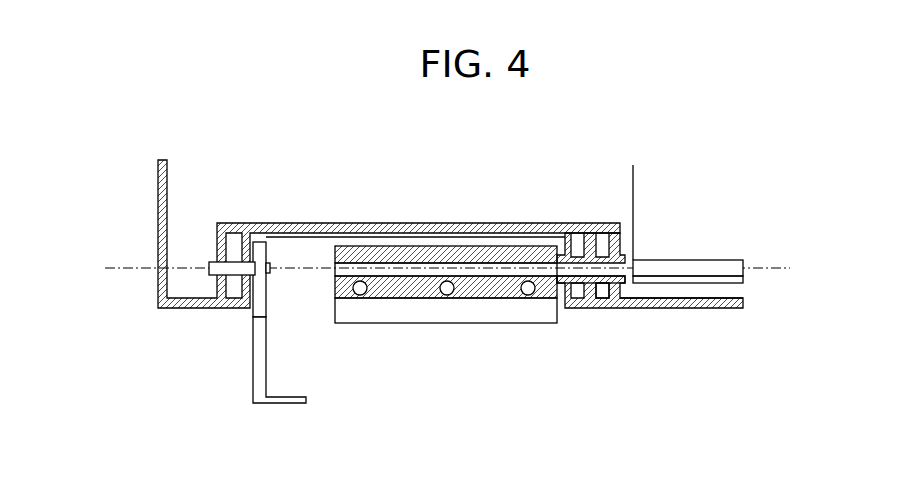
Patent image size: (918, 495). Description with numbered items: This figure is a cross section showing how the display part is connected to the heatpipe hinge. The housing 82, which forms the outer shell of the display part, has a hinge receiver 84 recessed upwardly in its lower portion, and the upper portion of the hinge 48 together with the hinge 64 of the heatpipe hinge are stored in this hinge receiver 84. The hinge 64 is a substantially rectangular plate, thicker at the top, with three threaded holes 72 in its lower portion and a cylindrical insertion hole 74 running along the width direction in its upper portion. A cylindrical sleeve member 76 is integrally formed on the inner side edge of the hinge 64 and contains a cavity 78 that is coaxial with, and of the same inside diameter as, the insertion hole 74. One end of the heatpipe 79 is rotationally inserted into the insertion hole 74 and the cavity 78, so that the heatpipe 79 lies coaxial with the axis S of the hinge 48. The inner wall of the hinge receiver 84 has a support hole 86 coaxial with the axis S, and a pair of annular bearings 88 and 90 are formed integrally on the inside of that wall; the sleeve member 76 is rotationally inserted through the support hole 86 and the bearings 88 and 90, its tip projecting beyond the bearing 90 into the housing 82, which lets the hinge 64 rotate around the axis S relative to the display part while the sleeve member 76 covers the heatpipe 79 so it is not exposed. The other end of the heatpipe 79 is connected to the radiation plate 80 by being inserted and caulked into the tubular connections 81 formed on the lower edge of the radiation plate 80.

The hinge 48 is at (261, 374).
The hinge 64 is at (436, 268).
The threaded holes 72 is at (362, 295).
The insertion hole 74 is at (389, 262).
The sleeve member 76 is at (604, 259).
The cavity 78 is at (625, 266).
The heatpipe 79 is at (473, 268).
The radiation plate 80 is at (632, 182).
The tubular connections 81 is at (724, 284).
The housing 82 is at (158, 302).
The hinge receiver 84 is at (282, 238).
The support hole 86 is at (560, 285).
The annular bearing 88 is at (603, 299).
The annular bearing 90 is at (620, 292).
The axis S is at (143, 267).